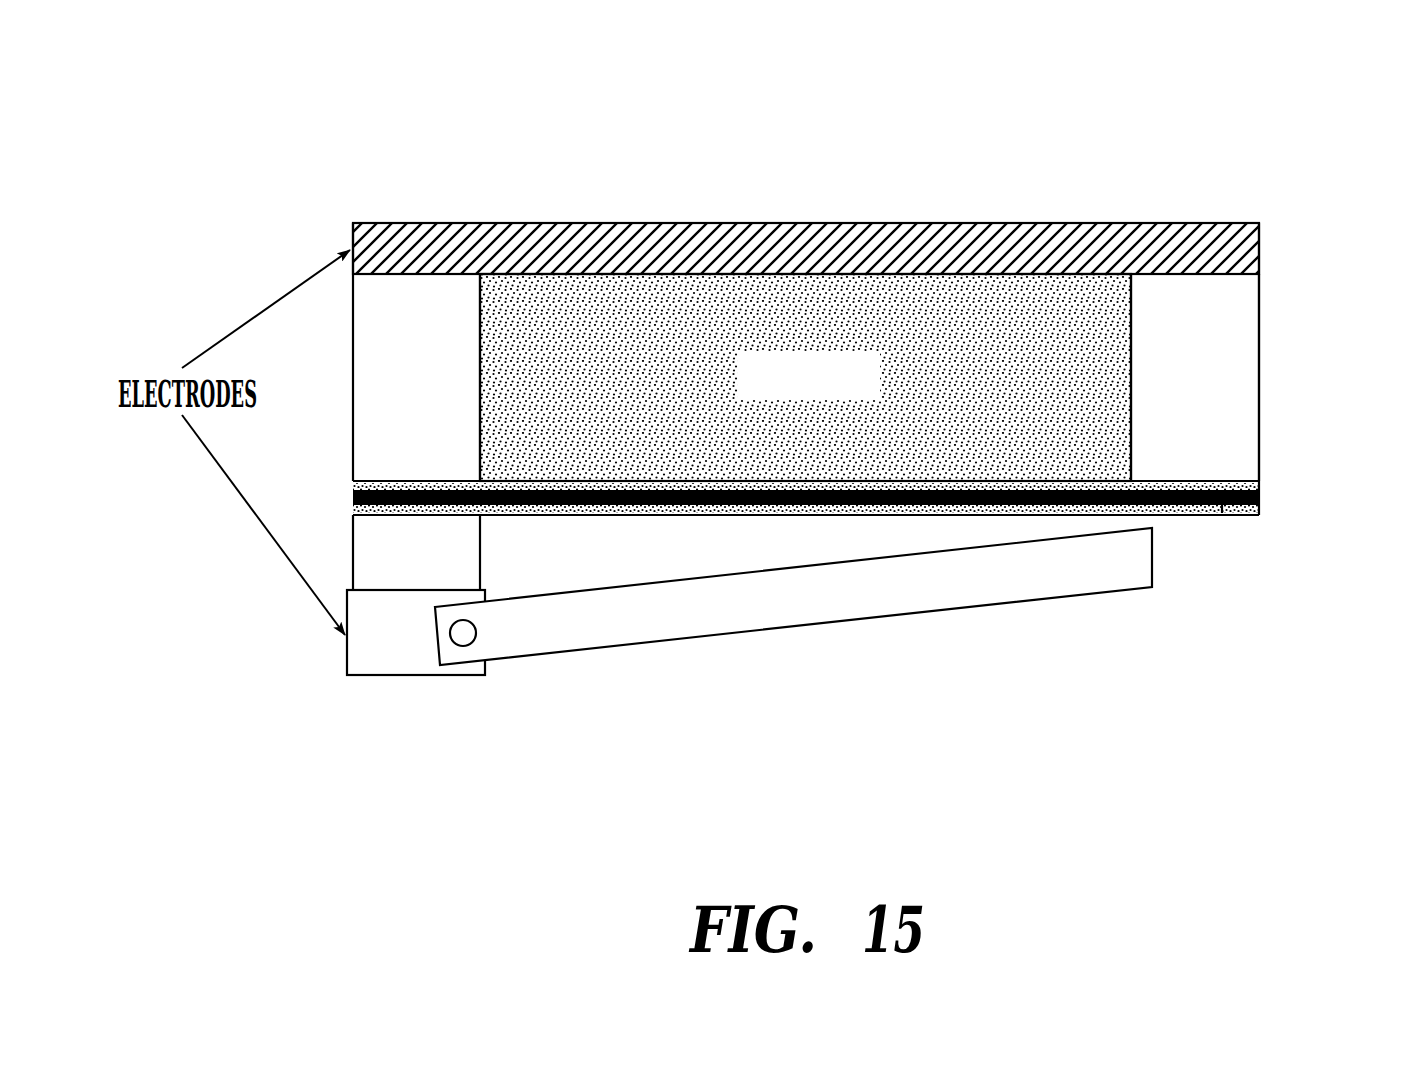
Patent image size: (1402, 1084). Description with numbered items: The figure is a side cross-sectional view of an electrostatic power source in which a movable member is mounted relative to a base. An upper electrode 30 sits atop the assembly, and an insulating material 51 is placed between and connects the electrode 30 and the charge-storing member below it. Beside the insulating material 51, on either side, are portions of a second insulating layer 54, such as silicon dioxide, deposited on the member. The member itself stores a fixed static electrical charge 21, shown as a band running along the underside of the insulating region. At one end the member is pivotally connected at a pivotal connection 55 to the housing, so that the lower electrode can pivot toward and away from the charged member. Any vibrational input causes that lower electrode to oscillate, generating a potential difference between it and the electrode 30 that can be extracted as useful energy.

The electrode 30 is at (1183, 237).
The insulating material 51 is at (922, 295).
The second insulating layer 54 is at (368, 358).
The fixed static electrical charge 21 is at (1250, 495).
The pivotal connection 55 is at (463, 633).